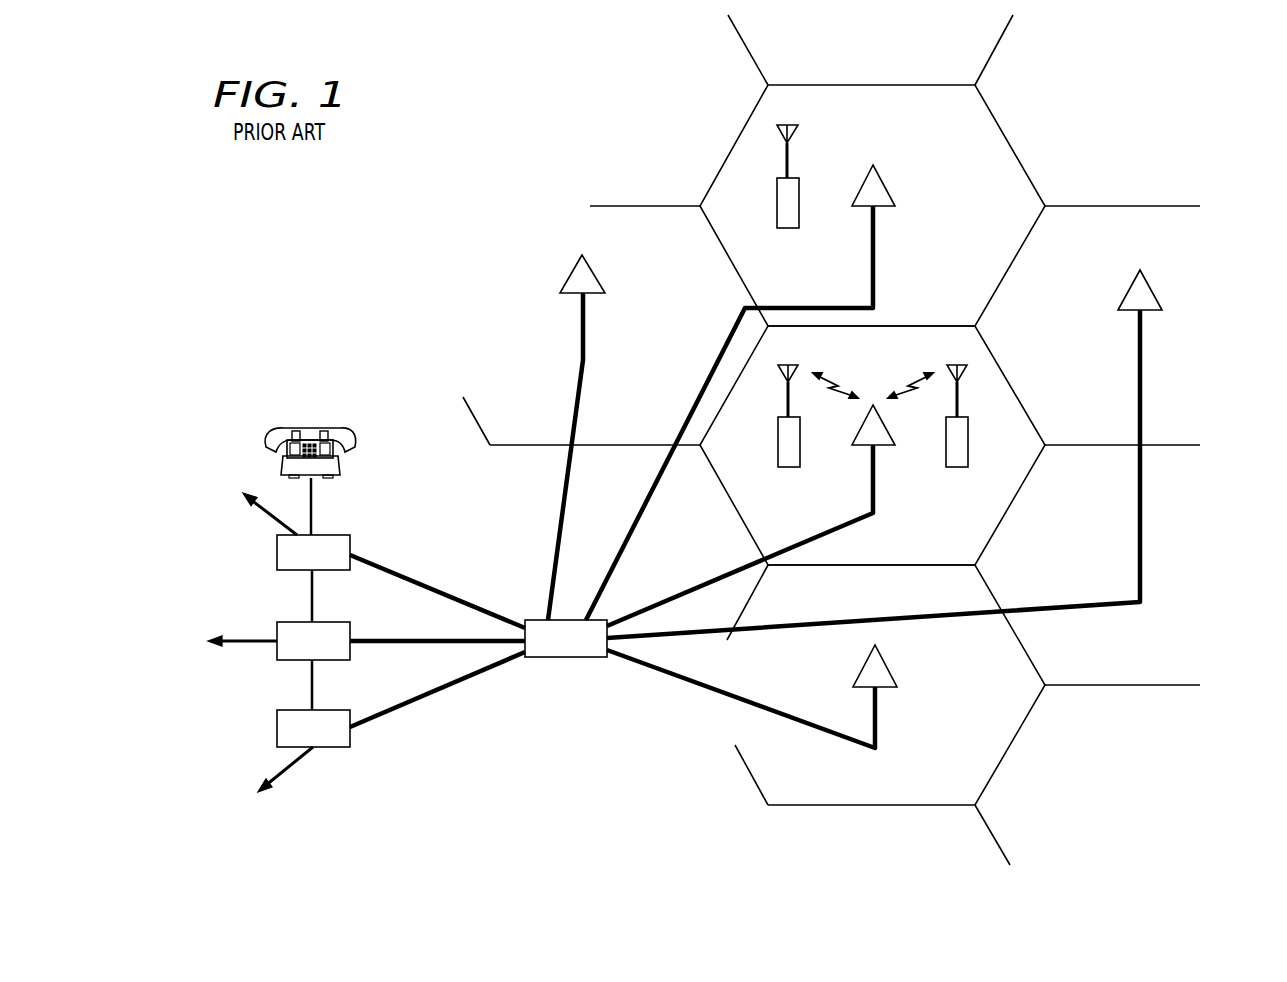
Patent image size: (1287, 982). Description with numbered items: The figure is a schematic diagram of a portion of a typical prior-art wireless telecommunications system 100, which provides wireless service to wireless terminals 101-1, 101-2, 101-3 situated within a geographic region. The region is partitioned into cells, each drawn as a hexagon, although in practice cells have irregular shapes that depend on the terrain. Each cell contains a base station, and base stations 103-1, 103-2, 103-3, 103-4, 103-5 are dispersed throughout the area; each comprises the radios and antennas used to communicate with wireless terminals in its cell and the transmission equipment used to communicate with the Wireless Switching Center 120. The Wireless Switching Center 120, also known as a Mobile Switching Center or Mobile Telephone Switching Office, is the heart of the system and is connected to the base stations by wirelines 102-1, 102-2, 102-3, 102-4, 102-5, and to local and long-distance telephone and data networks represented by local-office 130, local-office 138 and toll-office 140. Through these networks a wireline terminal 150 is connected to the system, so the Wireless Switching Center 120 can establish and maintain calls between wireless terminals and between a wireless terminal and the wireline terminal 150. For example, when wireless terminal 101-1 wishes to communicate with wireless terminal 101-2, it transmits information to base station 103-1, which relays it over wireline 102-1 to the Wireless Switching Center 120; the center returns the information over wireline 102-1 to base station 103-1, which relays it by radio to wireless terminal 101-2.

The wireless telecommunications system 100 is at (298, 197).
The wireless terminal 101-1 is at (788, 468).
The wireless terminal 101-2 is at (957, 468).
The wireless terminal 101-3 is at (787, 229).
The wireline 102-1 is at (690, 590).
The wireline 102-2 is at (650, 500).
The wireline 102-3 is at (553, 560).
The wireline 102-4 is at (690, 639).
The wireline 102-5 is at (672, 680).
The base station 103-1 is at (875, 493).
The base station 103-2 is at (877, 238).
The base station 103-3 is at (587, 337).
The base station 103-4 is at (1143, 362).
The base station 103-5 is at (878, 731).
The Wireless Switching Center 120 is at (567, 658).
The local-office 130 is at (277, 550).
The local-office 138 is at (277, 725).
The toll-office 140 is at (277, 625).
The wireline terminal 150 is at (315, 426).